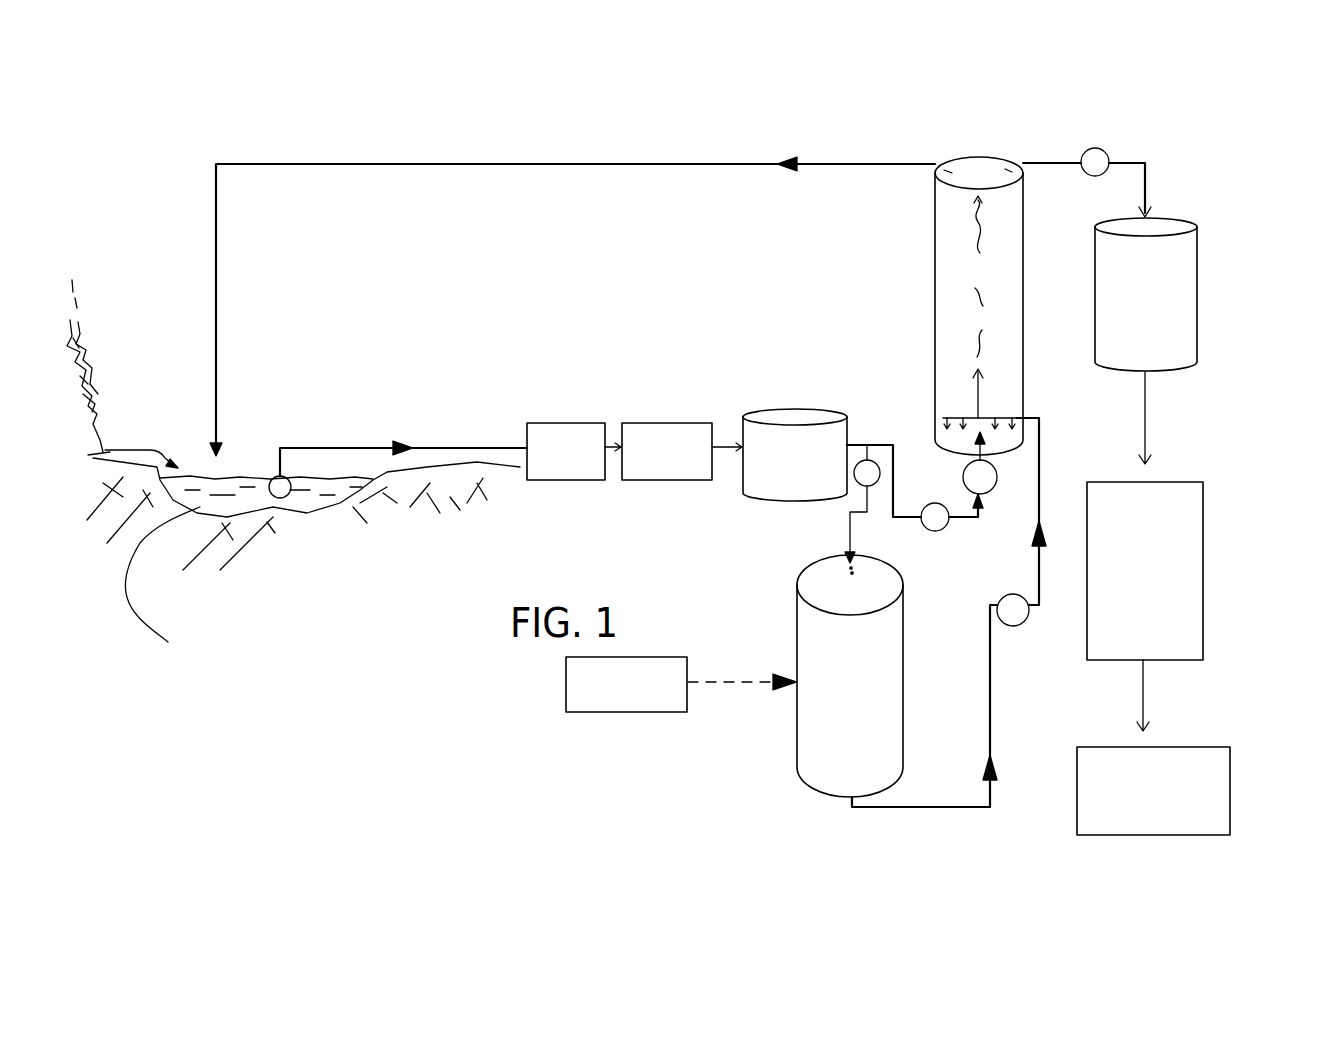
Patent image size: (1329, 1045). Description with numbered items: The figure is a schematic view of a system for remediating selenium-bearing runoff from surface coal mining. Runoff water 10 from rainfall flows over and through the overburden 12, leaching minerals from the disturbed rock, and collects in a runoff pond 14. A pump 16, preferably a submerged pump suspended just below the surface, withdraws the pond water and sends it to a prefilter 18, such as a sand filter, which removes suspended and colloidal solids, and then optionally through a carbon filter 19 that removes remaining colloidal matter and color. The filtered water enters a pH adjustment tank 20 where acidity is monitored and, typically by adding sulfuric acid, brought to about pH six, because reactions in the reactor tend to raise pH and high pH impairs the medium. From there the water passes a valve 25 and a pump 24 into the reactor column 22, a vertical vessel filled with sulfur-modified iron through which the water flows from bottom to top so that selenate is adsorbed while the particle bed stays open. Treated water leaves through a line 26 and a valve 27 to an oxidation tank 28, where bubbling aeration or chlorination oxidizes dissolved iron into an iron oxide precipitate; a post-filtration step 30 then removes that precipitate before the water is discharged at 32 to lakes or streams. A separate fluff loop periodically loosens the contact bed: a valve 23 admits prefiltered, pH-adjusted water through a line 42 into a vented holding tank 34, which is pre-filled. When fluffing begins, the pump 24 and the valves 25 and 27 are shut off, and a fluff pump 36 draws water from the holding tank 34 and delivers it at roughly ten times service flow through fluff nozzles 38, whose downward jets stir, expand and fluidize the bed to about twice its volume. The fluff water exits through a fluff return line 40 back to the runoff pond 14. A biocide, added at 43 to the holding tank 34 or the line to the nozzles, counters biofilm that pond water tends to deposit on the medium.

The runoff water 10 is at (90, 372).
The overburden 12 is at (90, 410).
The runoff pond 14 is at (220, 477).
The pump 16 is at (260, 480).
The prefilter 18 is at (553, 422).
The carbon filter 19 is at (663, 422).
The pH adjustment tank 20 is at (767, 410).
The reactor column 22 is at (945, 280).
The valve 23 is at (860, 487).
The pump 24 is at (998, 473).
The valve 25 is at (931, 503).
The line 26 is at (1050, 160).
The valve 27 is at (1108, 153).
The oxidation tank 28 is at (1198, 243).
The post-filtration step 30 is at (1167, 483).
The discharge 32 is at (1207, 743).
The holding tank 34 is at (803, 717).
The fluff pump 36 is at (1022, 627).
The fluff nozzles 38 is at (1003, 416).
The fluff return line 40 is at (653, 164).
The line 42 is at (848, 538).
The biocide addition 43 is at (615, 712).